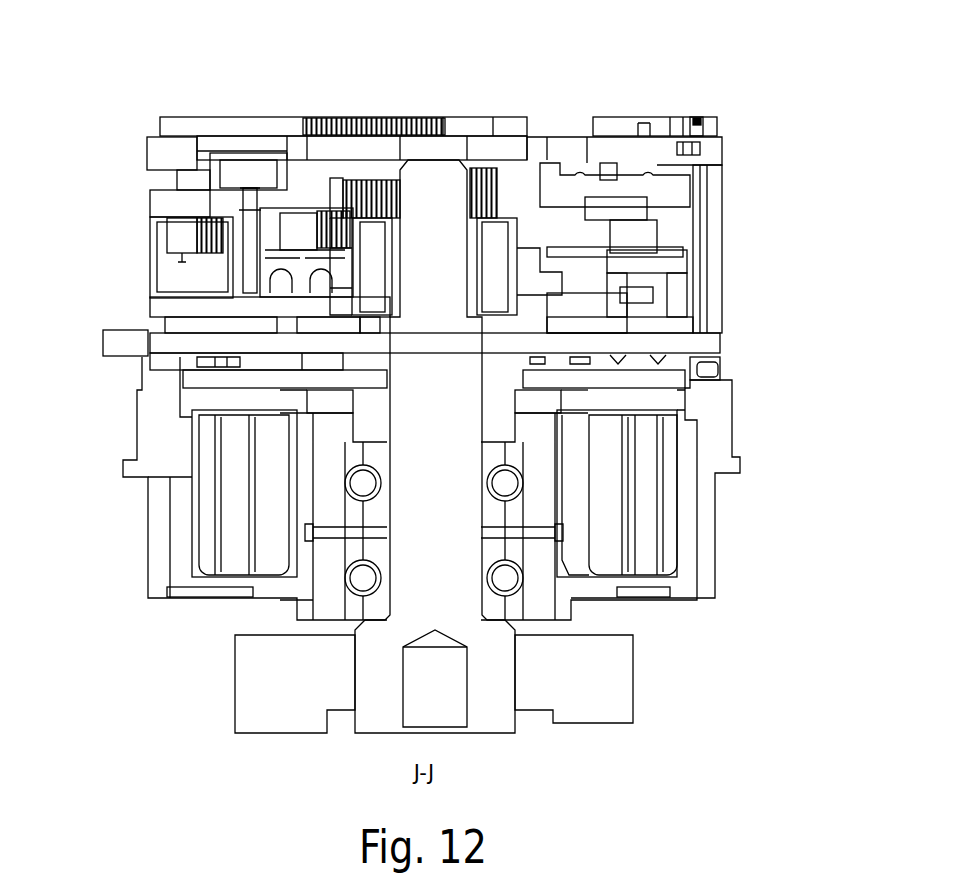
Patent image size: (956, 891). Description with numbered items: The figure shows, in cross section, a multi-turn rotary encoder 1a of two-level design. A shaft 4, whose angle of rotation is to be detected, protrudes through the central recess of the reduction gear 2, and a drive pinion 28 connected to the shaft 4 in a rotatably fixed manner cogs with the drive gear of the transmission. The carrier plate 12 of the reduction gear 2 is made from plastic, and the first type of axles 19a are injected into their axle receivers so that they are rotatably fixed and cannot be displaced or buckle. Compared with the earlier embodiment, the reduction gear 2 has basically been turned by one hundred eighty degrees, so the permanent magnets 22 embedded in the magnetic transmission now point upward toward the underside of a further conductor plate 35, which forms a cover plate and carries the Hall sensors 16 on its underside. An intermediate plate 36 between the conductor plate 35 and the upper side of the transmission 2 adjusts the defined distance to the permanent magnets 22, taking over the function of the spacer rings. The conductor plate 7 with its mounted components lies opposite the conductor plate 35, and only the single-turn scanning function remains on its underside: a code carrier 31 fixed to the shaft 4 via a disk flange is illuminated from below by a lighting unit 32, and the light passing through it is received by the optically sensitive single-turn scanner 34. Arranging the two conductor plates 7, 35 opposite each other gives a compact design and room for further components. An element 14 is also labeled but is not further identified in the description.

The multi-turn rotary encoder 1a is at (348, 76).
The reduction gear 2 is at (390, 148).
The shaft 4 is at (432, 177).
The conductor plate 7 is at (708, 343).
The carrier plate 12 is at (547, 257).
The housing 14 is at (153, 197).
The Hall sensor 16 is at (272, 168).
The first type of axles 19a is at (227, 268).
The permanent magnets 22 is at (222, 152).
The drive pinion 28 is at (508, 213).
The code carrier 31 is at (718, 382).
The lighting unit 32 is at (732, 428).
The single-turn scanner 34 is at (712, 368).
The conductor plate 35 is at (698, 122).
The intermediate plate 36 is at (722, 162).